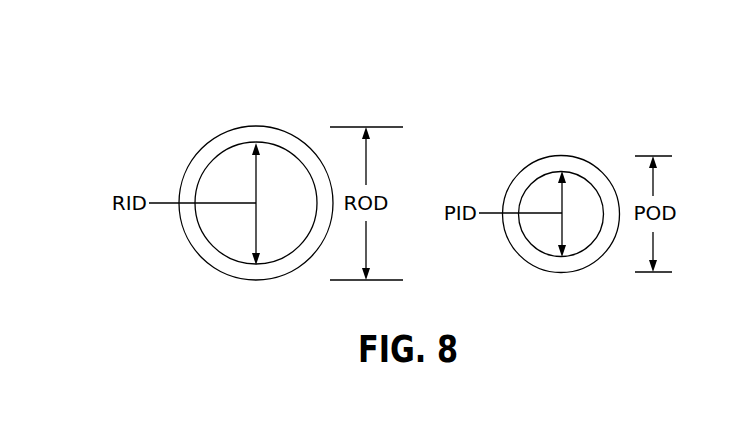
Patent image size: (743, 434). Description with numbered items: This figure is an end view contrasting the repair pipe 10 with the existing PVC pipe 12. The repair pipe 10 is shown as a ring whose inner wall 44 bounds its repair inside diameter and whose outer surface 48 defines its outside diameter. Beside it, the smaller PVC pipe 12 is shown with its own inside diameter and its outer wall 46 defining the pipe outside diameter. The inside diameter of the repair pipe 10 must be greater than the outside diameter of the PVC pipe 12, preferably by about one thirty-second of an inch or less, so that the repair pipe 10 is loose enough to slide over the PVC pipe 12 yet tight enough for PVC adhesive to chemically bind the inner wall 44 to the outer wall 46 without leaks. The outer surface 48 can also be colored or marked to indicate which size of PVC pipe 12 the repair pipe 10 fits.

The repair pipe 10 is at (256, 154).
The outer surface 48 is at (256, 154).
The inner wall 44 is at (304, 180).
The PVC pipe 12 is at (598, 168).
The outer wall 46 is at (554, 145).